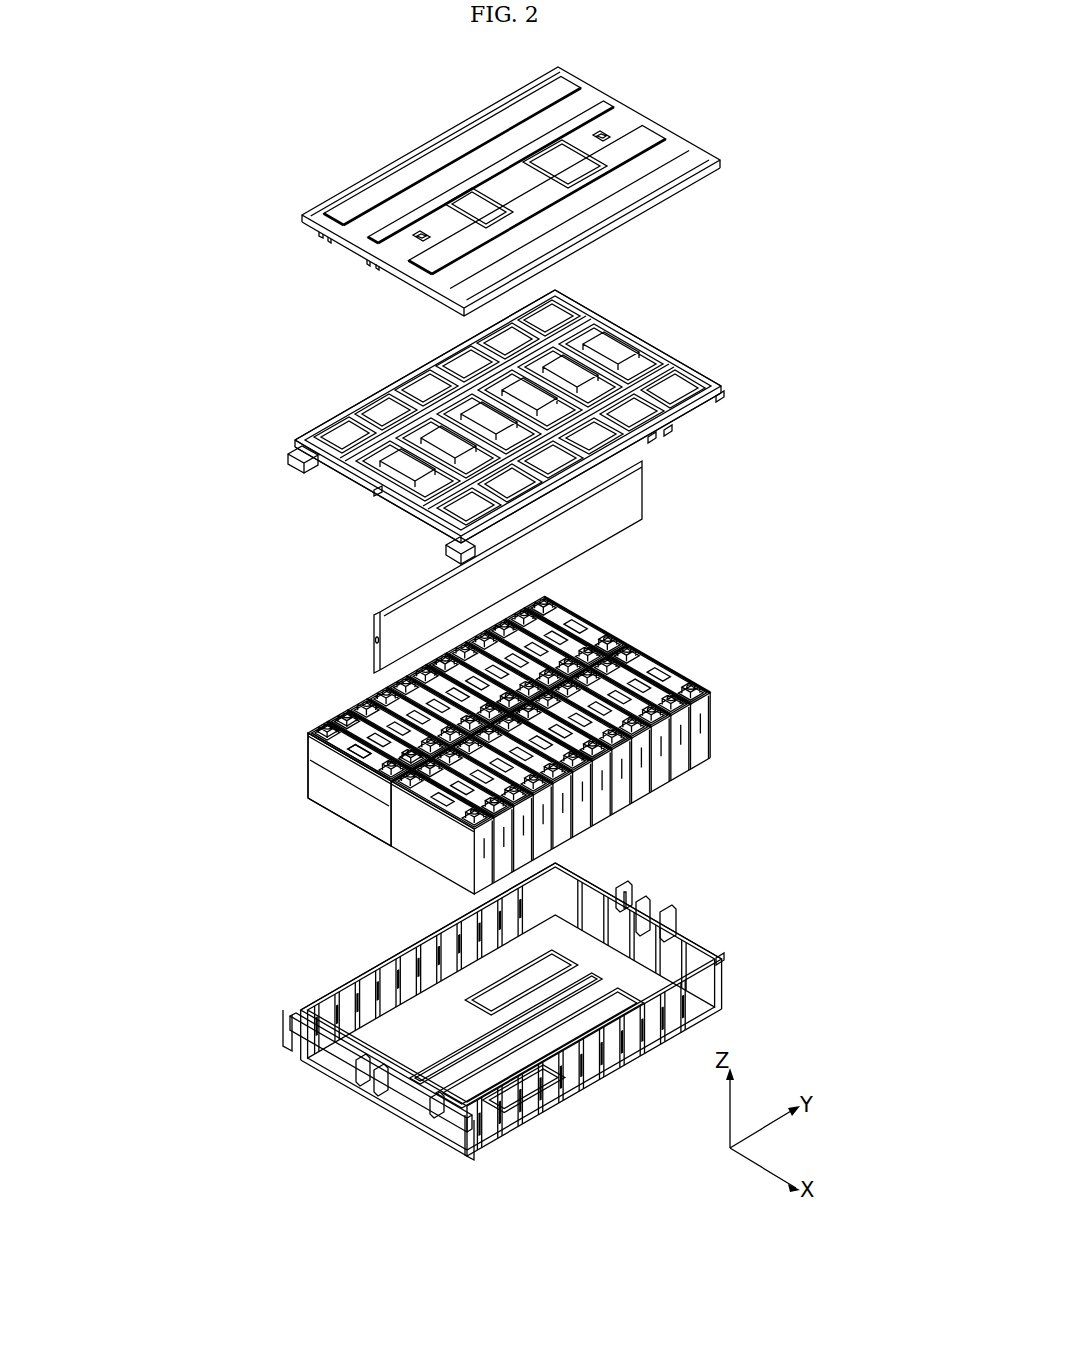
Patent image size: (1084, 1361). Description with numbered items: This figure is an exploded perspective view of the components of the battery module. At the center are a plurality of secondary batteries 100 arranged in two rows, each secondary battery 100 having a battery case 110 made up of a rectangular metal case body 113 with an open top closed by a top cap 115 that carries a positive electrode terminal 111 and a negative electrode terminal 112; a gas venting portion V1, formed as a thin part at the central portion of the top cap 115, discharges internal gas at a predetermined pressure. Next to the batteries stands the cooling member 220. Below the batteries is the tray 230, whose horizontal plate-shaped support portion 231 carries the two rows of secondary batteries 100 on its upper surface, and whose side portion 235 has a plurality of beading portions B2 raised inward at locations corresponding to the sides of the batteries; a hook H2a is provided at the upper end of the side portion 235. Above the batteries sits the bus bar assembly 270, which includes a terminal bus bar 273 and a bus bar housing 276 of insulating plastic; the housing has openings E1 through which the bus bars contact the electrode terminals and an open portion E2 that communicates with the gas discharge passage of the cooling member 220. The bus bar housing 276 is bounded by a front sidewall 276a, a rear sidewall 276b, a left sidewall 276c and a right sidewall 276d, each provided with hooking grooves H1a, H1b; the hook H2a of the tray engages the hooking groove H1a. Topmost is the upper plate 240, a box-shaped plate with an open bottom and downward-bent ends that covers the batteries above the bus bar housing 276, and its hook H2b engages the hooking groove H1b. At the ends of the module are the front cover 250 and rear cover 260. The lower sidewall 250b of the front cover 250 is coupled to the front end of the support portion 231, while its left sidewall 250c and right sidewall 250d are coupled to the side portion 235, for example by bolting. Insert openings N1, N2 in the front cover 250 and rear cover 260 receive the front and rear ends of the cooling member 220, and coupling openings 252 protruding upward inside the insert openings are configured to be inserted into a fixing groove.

The upper plate 240 is at (398, 142).
The hook H2b is at (378, 270).
The bus bar assembly 270 is at (516, 423).
The bus bar housing 276 is at (716, 384).
The front sidewall 276a is at (345, 478).
The rear sidewall 276b is at (628, 321).
The left sidewall 276c is at (335, 428).
The right sidewall 276d is at (640, 450).
The opening E1 is at (388, 422).
The open portion E2 is at (422, 428).
The hooking groove H1a is at (724, 395).
The hooking groove H1b is at (672, 430).
The terminal bus bar 273 is at (292, 460).
The cooling member 220 is at (372, 606).
The secondary battery 100 is at (459, 745).
The battery case 110 is at (232, 716).
The positive electrode terminal 111 is at (348, 716).
The negative electrode terminal 112 is at (322, 732).
The case body 113 is at (306, 769).
The top cap 115 is at (304, 733).
The gas venting portion V1 is at (358, 760).
The tray 230 is at (506, 1030).
The support portion 231 is at (398, 1030).
The side portion 235 is at (318, 985).
The beading portion B2 is at (388, 1010).
The hook H2a is at (724, 959).
The front cover 250 is at (455, 1040).
The lower sidewall 250b is at (438, 1120).
The left sidewall 250c is at (290, 1056).
The right sidewall 250d is at (462, 1152).
The coupling opening 252 is at (382, 1094).
The insert opening N1 is at (364, 1086).
The insert opening N2 is at (634, 898).
The rear cover 260 is at (676, 902).